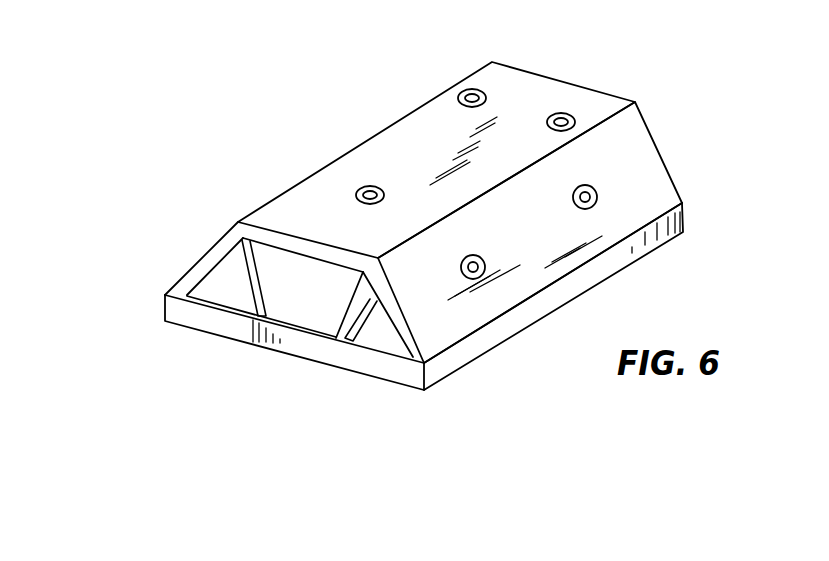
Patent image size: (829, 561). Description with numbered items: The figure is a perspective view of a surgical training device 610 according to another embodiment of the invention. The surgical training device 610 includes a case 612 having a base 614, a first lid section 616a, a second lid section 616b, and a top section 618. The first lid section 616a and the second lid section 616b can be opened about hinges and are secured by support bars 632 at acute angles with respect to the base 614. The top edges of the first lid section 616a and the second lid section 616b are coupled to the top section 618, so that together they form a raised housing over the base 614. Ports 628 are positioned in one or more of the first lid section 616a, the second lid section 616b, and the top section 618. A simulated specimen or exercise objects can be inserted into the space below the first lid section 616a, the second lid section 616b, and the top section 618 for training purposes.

The surgical training device 610 is at (672, 140).
The case 612 is at (150, 330).
The base 614 is at (300, 348).
The first lid section 616a is at (212, 260).
The second lid section 616b is at (407, 340).
The top section 618 is at (603, 101).
The ports 628 is at (484, 92).
The support bars 632 is at (247, 295).